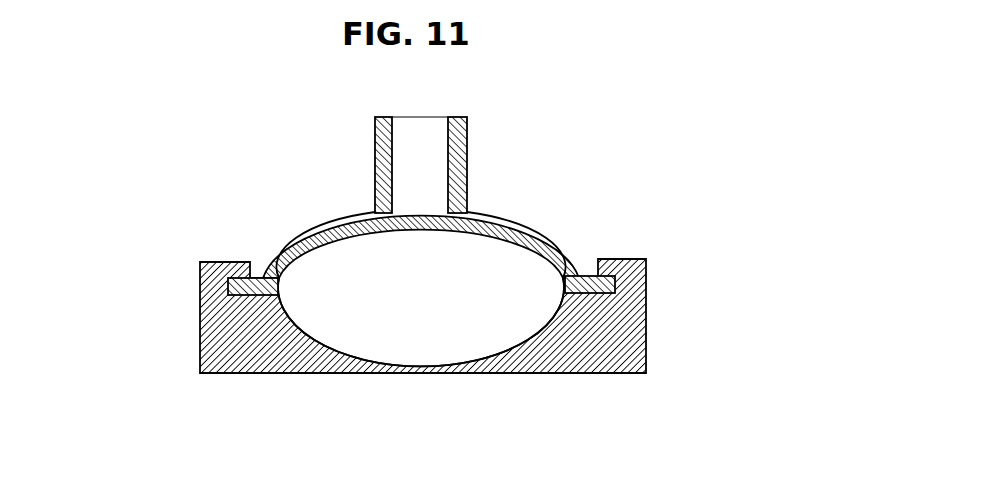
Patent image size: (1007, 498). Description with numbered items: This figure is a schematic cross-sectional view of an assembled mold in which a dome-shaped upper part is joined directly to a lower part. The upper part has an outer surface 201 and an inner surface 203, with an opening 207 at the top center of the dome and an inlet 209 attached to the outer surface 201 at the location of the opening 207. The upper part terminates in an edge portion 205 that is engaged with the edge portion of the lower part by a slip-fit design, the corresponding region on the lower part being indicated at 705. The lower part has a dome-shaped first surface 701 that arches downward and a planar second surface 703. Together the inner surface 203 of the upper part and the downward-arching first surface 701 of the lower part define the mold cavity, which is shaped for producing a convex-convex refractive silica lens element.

The outer surface 201 is at (543, 222).
The inner surface 203 is at (333, 237).
The opening 207 is at (430, 205).
The inlet 209 is at (467, 152).
The edge portion 205 is at (613, 282).
The left bonding pad 705 is at (218, 270).
The first surface 701 is at (458, 358).
The second surface 703 is at (555, 378).